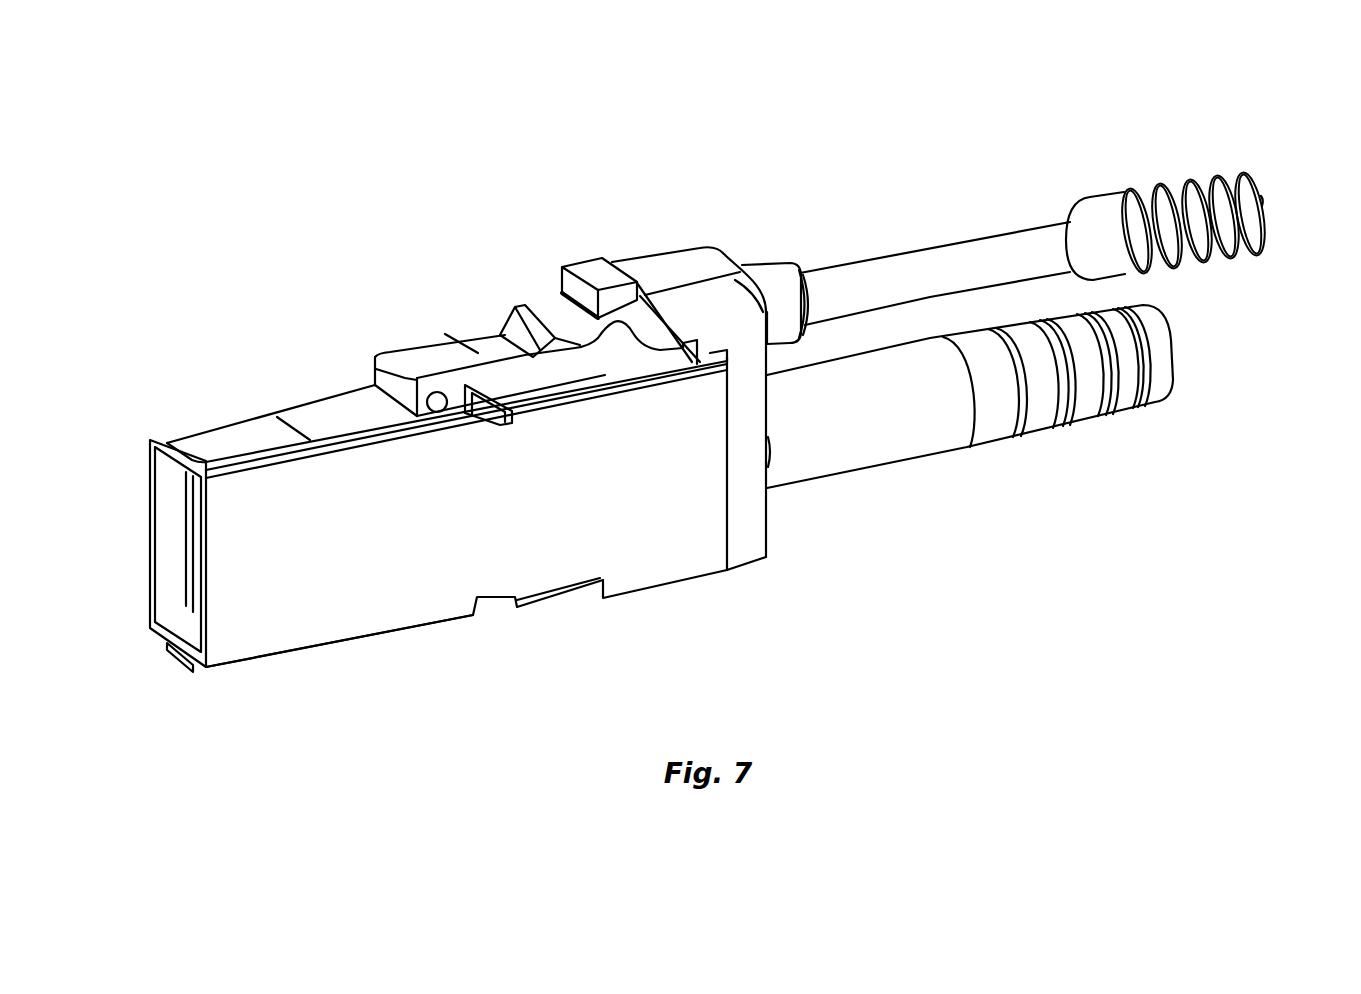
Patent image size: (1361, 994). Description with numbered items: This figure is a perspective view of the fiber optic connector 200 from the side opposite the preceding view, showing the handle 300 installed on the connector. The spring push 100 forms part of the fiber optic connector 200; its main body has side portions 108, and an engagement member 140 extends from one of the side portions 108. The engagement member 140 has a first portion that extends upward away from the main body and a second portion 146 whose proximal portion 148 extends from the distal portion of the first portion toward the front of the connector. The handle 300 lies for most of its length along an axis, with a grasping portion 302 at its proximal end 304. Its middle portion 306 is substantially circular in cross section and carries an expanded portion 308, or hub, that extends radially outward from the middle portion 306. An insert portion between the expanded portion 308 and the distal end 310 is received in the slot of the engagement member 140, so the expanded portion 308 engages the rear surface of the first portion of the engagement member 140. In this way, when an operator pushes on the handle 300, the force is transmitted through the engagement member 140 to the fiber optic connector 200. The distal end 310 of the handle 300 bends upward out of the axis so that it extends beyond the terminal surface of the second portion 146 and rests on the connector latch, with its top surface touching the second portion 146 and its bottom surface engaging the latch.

The spring push 100 is at (742, 580).
The side portions 108 is at (757, 517).
The engagement member 140 is at (665, 252).
The second portion 146 is at (630, 270).
The proximal portion 148 is at (723, 258).
The fiber optic connector 200 is at (498, 630).
The handle 300 is at (1142, 113).
The grasping portion 302 is at (1197, 173).
The proximal end 304 is at (1260, 197).
The middle portion 306 is at (905, 250).
The expanded portion 308 is at (765, 260).
The distal end 310 is at (583, 258).